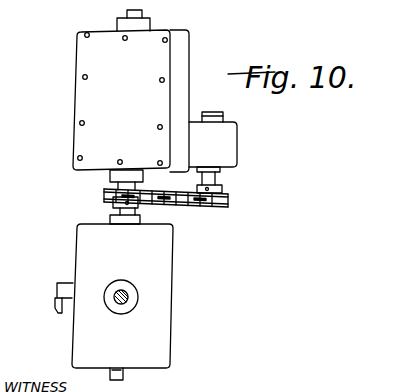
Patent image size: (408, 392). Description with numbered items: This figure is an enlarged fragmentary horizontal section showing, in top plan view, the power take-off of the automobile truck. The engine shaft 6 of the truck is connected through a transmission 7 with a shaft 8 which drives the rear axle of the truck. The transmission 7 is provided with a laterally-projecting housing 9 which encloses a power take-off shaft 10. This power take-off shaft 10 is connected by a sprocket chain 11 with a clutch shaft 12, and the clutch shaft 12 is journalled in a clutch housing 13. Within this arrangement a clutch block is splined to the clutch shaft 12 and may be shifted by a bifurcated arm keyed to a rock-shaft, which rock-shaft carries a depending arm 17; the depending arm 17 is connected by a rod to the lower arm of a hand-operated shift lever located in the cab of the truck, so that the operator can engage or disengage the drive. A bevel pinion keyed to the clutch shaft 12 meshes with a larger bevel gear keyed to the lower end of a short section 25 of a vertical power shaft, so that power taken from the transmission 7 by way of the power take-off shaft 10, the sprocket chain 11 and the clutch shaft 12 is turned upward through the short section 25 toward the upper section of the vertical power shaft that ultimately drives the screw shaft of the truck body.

The engine shaft 6 is at (125, 375).
The transmission 7 is at (131, 101).
The shaft 8 is at (130, 12).
The laterally-projecting housing 9 is at (213, 157).
The power take-off shaft 10 is at (212, 112).
The sprocket chain 11 is at (194, 207).
The clutch shaft 12 is at (118, 210).
The clutch housing 13 is at (82, 335).
The depending arm 17 is at (57, 300).
The short section of vertical power shaft 25 is at (121, 286).